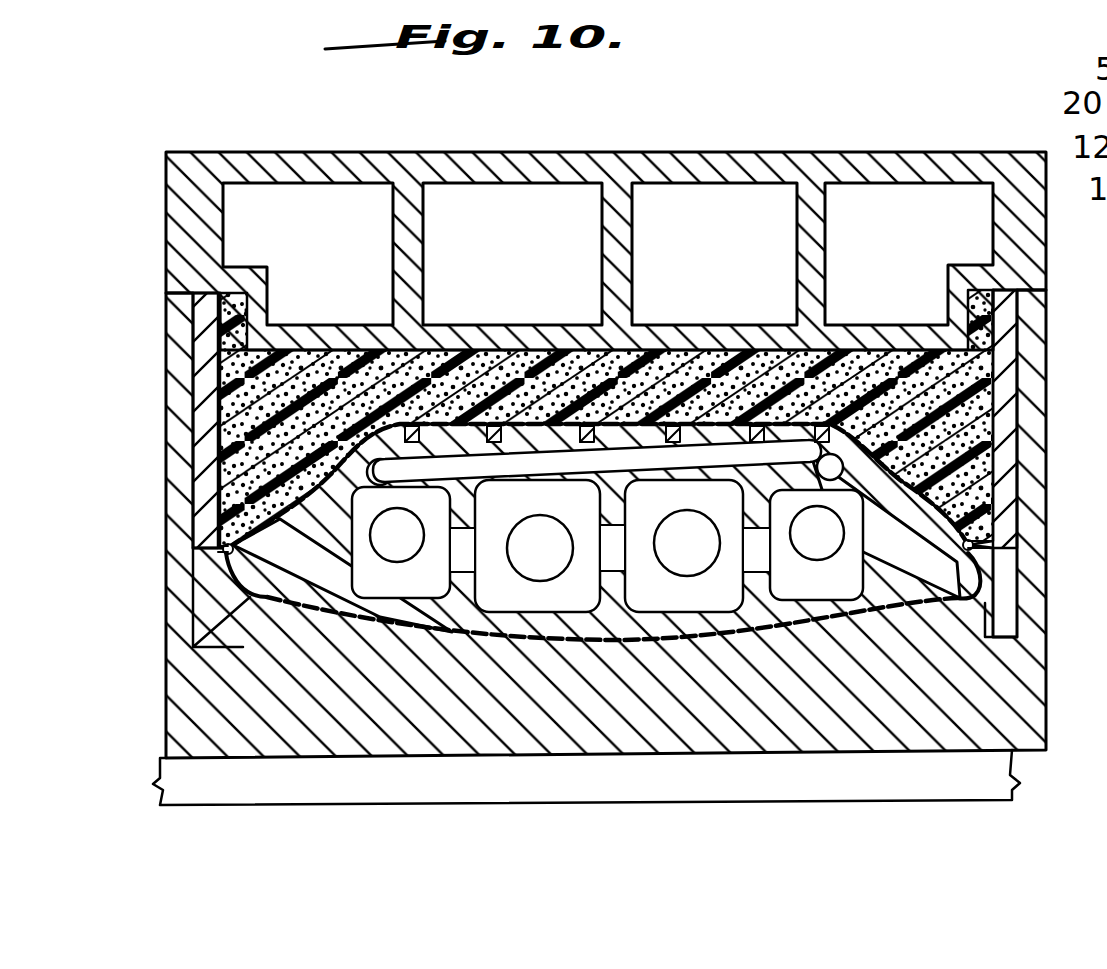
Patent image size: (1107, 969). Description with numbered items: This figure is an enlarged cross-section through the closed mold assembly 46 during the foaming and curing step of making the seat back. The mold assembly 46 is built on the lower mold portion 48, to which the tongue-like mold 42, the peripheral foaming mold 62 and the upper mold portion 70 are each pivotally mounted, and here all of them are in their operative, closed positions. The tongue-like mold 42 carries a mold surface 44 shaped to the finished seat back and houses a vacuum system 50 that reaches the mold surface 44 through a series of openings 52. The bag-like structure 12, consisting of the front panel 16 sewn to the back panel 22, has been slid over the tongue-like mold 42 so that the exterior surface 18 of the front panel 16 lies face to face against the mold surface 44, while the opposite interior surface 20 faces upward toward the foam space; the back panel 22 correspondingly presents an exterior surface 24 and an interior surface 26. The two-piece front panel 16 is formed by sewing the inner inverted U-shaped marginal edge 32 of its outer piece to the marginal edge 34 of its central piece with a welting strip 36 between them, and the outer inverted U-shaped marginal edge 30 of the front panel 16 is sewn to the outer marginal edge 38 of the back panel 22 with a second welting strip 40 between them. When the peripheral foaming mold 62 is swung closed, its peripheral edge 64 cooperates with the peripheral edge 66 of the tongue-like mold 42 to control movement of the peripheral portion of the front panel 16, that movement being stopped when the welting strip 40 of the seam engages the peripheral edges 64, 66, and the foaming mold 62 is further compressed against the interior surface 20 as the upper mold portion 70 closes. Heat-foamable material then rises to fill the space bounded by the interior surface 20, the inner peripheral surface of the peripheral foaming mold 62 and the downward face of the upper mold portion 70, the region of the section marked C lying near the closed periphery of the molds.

The upper mold portion 70 is at (188, 214).
The mold assembly 46 is at (913, 152).
The lower mold portion 48 is at (1018, 720).
The peripheral foaming mold 62 is at (200, 395).
The interior surface of front panel 20 is at (583, 360).
The inner inverted U-shaped marginal edge 32 is at (327, 360).
The marginal edge of central piece 34 is at (383, 360).
The welting strip 36 is at (443, 360).
The front panel 16 is at (653, 360).
The mold surface 44 is at (678, 360).
The back panel 22 is at (300, 600).
The exterior surface of back panel 24 is at (240, 575).
The outer inverted U-shaped marginal edge 30 is at (223, 551).
The peripheral edge of peripheral foaming mold 64 is at (226, 540).
The peripheral edge of tongue-like mold 66 is at (226, 547).
The welting strip 40 is at (232, 560).
The outer inverted U-shaped marginal edge of back panel 38 is at (245, 578).
The bag-like structure 12 is at (988, 598).
The interior surface of back panel 26 is at (1010, 640).
The center C is at (1050, 392).
The exterior surface of front panel 18 is at (250, 478).
The openings 52 is at (563, 460).
The tongue-like mold 42 is at (315, 603).
The vacuum system 50 is at (520, 603).